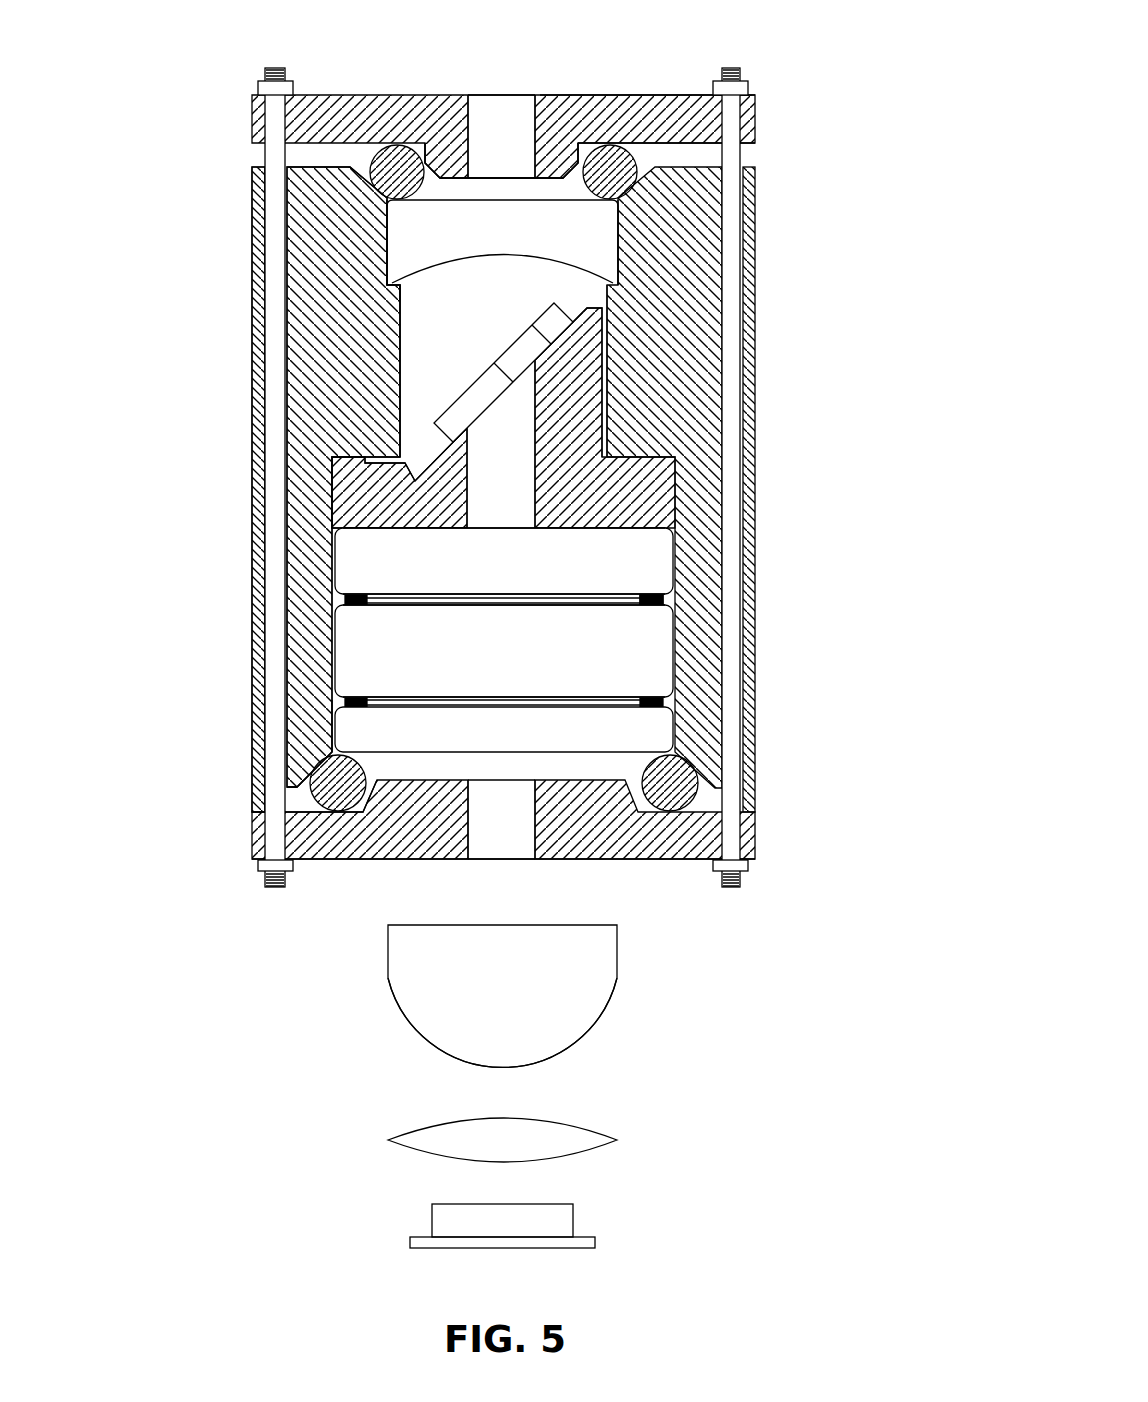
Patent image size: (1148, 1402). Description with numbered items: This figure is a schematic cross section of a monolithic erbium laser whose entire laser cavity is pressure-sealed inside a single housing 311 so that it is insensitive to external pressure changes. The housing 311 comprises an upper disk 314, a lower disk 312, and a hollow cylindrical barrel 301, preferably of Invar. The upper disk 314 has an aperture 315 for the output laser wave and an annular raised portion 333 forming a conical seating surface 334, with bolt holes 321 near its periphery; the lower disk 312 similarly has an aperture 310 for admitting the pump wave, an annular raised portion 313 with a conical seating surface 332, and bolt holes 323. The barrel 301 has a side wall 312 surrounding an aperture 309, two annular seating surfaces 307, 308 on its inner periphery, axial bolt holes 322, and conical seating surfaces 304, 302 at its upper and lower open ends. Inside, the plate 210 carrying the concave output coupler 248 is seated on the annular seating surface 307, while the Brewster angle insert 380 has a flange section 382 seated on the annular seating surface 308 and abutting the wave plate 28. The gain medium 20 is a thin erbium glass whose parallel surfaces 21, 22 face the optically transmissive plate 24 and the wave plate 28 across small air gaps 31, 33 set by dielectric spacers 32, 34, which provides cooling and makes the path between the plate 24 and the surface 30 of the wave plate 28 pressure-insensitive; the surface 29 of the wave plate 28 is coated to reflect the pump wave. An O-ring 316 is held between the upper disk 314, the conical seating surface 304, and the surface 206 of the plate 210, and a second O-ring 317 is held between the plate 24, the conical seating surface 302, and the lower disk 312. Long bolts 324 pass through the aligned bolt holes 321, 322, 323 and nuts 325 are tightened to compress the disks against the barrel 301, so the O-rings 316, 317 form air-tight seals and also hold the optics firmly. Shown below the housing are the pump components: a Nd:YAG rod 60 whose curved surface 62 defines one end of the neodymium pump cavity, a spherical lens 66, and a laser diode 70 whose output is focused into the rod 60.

The gain medium 20 is at (403, 663).
The first surface of the gain medium 21 is at (383, 695).
The second surface of the gain medium 22 is at (387, 607).
The optically transmissive plate 24 is at (645, 735).
The wave plate 28 is at (495, 567).
The surface of the wave plate 29 is at (385, 593).
The surface of the wave plate 30 is at (367, 528).
The air gap 31 is at (285, 811).
The spacer 32 is at (413, 702).
The second air gap 33 is at (617, 599).
The spacer 34 is at (601, 630).
The Nd:YAG rod 60 is at (567, 1033).
The curved surface 62 is at (590, 1038).
The spherical lens 66 is at (612, 1140).
The laser diode 70 is at (597, 1238).
The surface of the plate 206 is at (588, 245).
The plate 210 is at (617, 240).
The output coupler 248 is at (592, 270).
The hollow cylindrical barrel 301 is at (191, 489).
The conical seating surface 302 is at (328, 731).
The conical seating surface 304 is at (437, 556).
The annular seating surface 307 is at (392, 288).
The annular seating surface 308 is at (350, 455).
The aperture 309 is at (432, 358).
The aperture 310 is at (521, 837).
The housing 311 is at (247, 223).
The lower disk 312 is at (322, 262).
The annular raised portion 313 is at (748, 868).
The upper disk 314 is at (598, 113).
The aperture 315 is at (515, 110).
The O-ring 316 is at (630, 167).
The second O-ring 317 is at (673, 792).
The bolt holes 321 is at (487, 89).
The bolt holes 322 is at (753, 427).
The bolt holes 323 is at (502, 851).
The bolts 324 is at (629, 477).
The nuts 325 is at (715, 85).
The conical seating surface 332 is at (413, 703).
The annular raised portion 333 is at (552, 178).
The conical seating surface 334 is at (432, 167).
The Brewster angle insert 380 is at (573, 396).
The flange section 382 is at (495, 418).